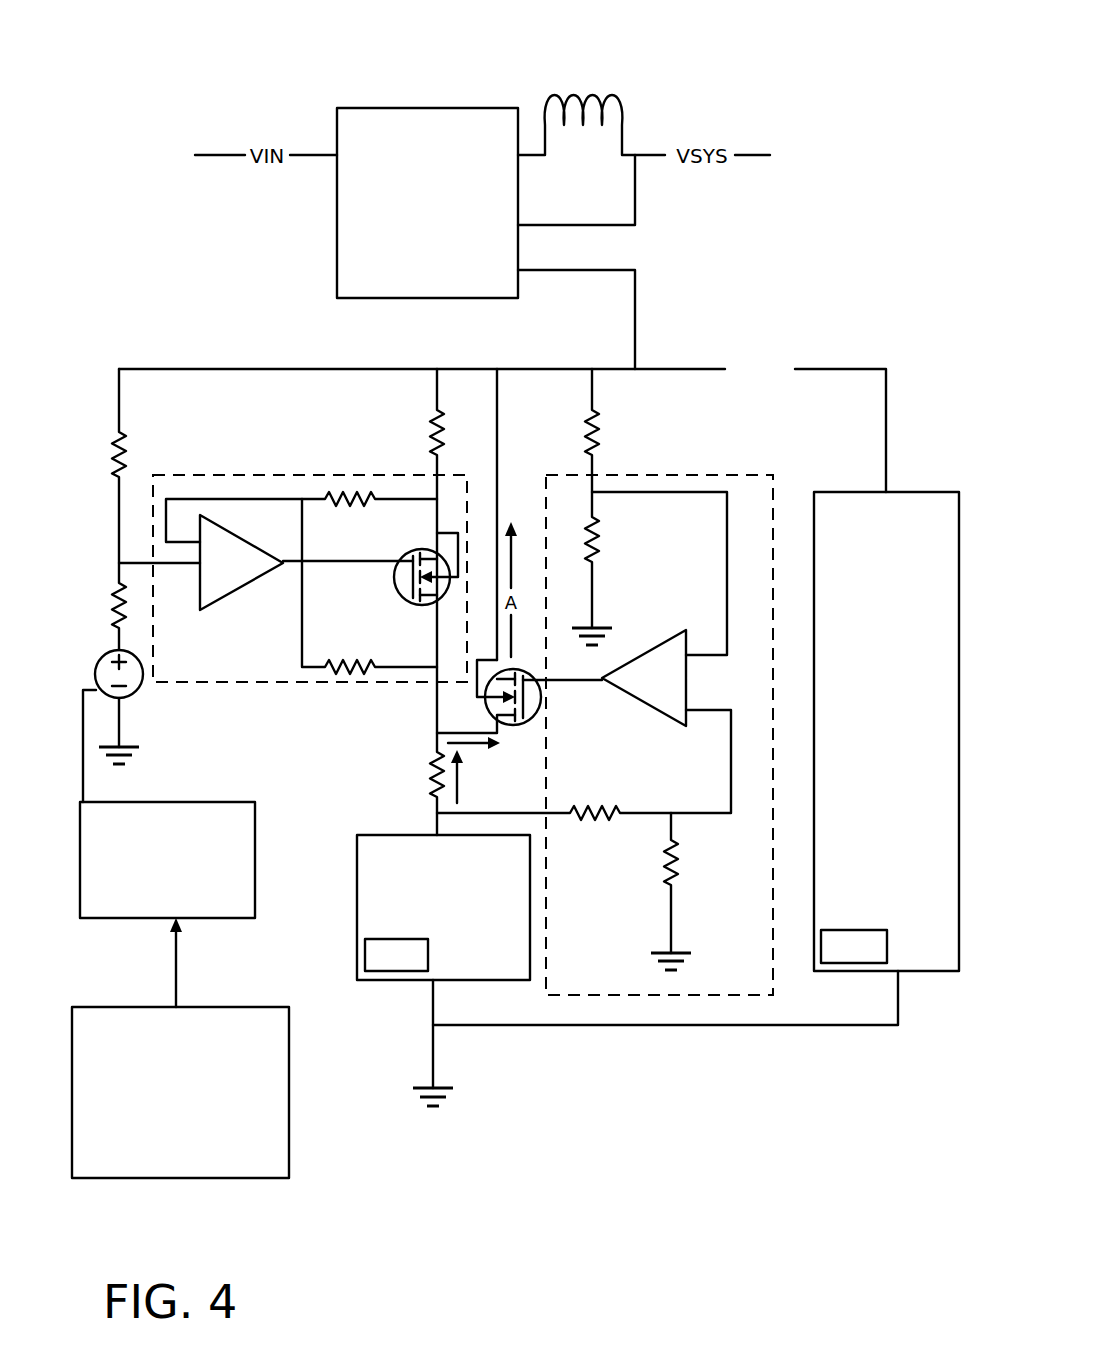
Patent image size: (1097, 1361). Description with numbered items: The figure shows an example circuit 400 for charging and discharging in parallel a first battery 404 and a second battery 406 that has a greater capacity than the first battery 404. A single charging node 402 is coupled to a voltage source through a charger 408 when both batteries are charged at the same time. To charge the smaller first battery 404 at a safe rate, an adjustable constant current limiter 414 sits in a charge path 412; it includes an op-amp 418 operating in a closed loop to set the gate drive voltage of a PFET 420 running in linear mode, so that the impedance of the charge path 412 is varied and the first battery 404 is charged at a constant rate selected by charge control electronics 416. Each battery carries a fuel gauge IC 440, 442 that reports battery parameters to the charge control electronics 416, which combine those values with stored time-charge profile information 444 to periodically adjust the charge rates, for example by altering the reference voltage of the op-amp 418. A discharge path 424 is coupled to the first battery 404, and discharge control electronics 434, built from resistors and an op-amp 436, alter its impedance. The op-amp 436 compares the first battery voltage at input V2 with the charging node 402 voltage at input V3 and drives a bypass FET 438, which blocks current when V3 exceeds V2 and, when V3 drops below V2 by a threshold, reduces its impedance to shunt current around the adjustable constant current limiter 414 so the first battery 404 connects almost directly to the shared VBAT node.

The example circuit 400 is at (745, 60).
The single charging node 402 is at (637, 365).
The first battery 404 is at (443, 907).
The second battery 406 is at (886, 731).
The charger 408 is at (427, 203).
The charge path 412 is at (435, 485).
The adjustable constant current limiter 414 is at (285, 685).
The charge control electronics 416 is at (167, 860).
The op-amp 418 is at (241, 562).
The PFET 420 is at (397, 592).
The discharge path 424 is at (497, 460).
The discharge control electronics 434 is at (725, 475).
The op-amp 436 is at (645, 678).
The bypass FET 438 is at (545, 722).
The fuel gauge IC 440 is at (396, 955).
The fuel gauge IC 442 is at (854, 946).
The stored time-charge profile information 444 is at (180, 1092).